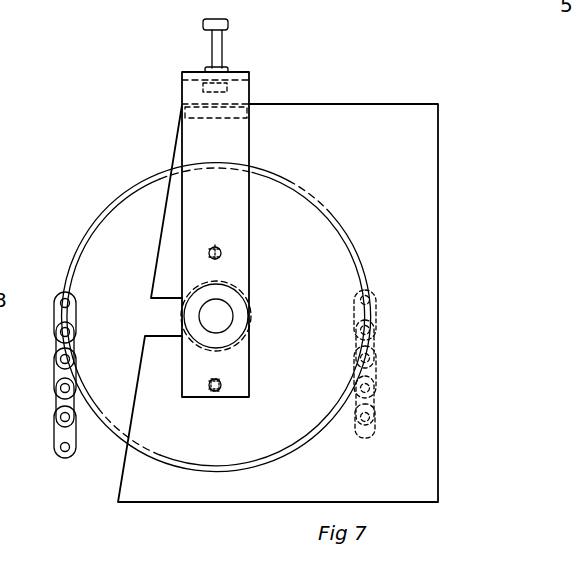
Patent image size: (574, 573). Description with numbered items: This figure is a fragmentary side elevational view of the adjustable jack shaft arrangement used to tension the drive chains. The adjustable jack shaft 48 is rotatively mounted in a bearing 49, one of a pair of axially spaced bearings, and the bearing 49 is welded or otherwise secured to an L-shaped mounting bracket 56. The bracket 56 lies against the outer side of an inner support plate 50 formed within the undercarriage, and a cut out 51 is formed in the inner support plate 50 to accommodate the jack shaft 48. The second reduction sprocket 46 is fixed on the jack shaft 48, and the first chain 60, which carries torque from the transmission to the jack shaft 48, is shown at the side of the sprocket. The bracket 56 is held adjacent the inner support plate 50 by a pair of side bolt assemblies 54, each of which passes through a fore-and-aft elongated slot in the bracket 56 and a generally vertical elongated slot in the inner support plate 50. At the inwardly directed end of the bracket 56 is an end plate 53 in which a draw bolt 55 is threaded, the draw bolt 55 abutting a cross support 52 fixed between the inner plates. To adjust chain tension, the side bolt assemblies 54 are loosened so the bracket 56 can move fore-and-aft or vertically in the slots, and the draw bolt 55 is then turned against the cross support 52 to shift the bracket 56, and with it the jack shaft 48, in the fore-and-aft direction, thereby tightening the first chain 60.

The second reduction sprocket 46 is at (114, 224).
The adjustable jack shaft 48 is at (220, 311).
The bearing 49 is at (232, 336).
The inner support plate 50 is at (438, 385).
The cut out 51 is at (186, 348).
The cross support 52 is at (250, 104).
The end plate 53 is at (250, 80).
The side bolt assembly 54 is at (222, 253).
The draw bolt 55 is at (228, 24).
The L-shaped mounting bracket 56 is at (238, 148).
The first chain 60 is at (60, 404).